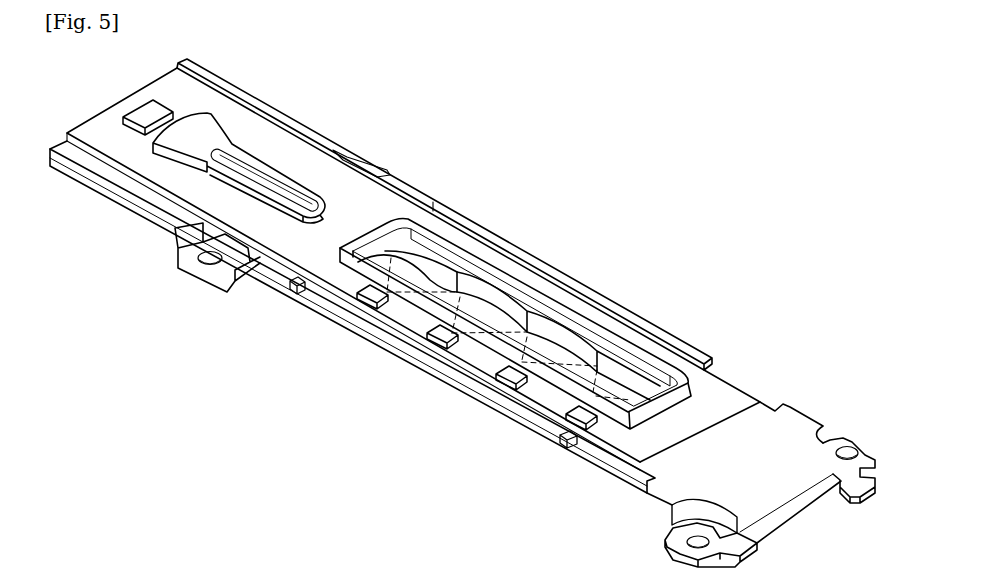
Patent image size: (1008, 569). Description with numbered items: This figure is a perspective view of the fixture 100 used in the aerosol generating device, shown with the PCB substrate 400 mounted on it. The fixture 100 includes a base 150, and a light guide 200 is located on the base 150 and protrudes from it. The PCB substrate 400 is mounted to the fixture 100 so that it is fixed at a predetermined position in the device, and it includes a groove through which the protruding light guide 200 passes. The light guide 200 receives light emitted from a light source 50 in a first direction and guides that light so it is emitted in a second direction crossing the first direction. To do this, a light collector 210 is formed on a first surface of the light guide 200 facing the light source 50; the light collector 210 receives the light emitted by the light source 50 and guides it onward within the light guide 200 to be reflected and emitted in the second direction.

The fixture 100 is at (660, 138).
The base 150 is at (786, 423).
The light guide 200 is at (230, 127).
The light collector 210 is at (430, 257).
The PCB substrate 400 is at (378, 203).
The light source 50 is at (143, 113).